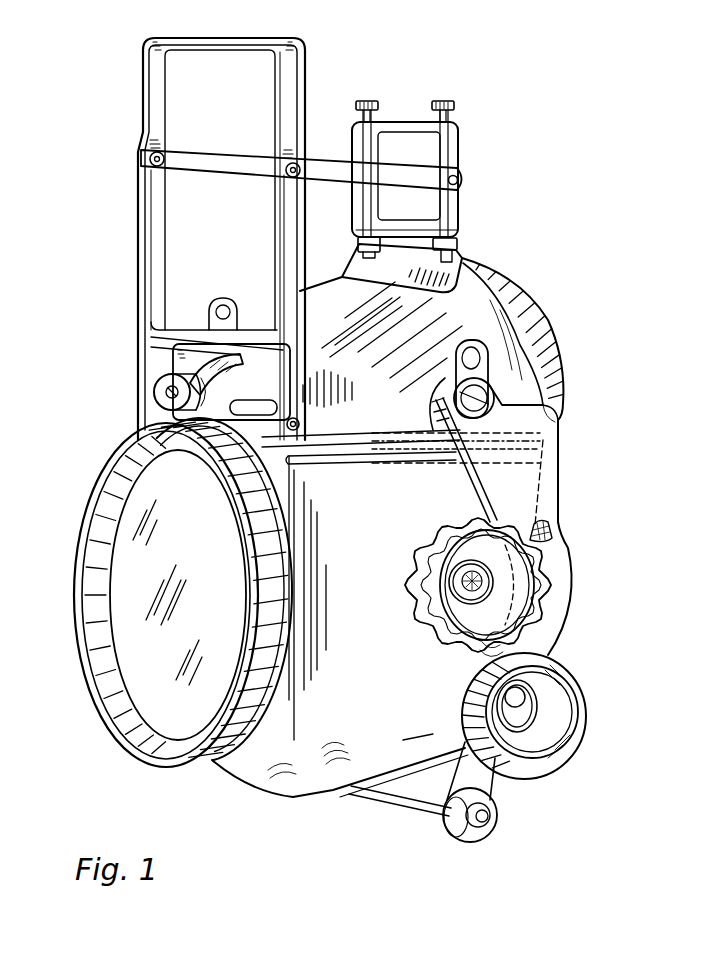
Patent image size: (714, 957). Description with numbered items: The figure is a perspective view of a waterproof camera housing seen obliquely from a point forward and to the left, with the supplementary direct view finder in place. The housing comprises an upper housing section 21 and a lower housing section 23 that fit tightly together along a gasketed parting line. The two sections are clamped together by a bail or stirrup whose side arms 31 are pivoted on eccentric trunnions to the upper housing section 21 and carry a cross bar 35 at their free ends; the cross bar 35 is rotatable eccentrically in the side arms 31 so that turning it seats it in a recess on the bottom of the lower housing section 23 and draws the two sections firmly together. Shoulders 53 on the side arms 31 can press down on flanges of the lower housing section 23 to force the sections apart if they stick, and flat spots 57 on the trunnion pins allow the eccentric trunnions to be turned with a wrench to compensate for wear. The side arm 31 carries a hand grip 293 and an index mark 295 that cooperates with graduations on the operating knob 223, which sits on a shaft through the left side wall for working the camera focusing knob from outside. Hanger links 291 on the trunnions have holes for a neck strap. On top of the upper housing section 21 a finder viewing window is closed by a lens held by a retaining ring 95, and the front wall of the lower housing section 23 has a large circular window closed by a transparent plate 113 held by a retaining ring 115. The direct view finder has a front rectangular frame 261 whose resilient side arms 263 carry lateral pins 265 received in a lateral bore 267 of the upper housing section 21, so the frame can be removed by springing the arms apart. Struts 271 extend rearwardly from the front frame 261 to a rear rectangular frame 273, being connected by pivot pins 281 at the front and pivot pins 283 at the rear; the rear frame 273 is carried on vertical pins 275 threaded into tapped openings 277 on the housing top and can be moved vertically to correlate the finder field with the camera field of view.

The upper housing section 21 is at (326, 292).
The lower housing section 23 is at (320, 795).
The side arms 31 is at (565, 574).
The cross bar 35 is at (406, 808).
The shoulders 53 is at (557, 430).
The flat spots 57 is at (478, 416).
The retaining ring 95 is at (560, 370).
The transparent plate 113 is at (122, 574).
The retaining ring 115 is at (102, 462).
The operating knob 223 is at (455, 642).
The rectangular frame 261 is at (276, 231).
The resilient side arms 263 is at (150, 355).
The lateral pins 265 is at (158, 408).
The lateral bore 267 is at (272, 430).
The struts 271 is at (228, 157).
The rear rectangular frame 273 is at (456, 152).
The pins 275 is at (434, 113).
The tapped openings 277 is at (372, 252).
The pivot pins 281 is at (291, 172).
The pivot pins 283 is at (460, 180).
The hanger links 291 is at (456, 366).
The hand grip 293 is at (575, 720).
The index mark 295 is at (555, 545).